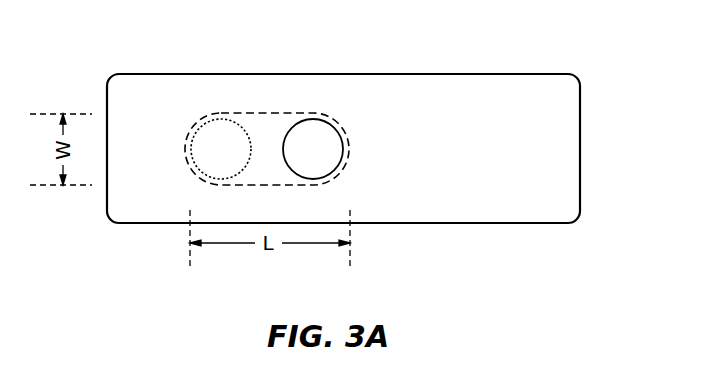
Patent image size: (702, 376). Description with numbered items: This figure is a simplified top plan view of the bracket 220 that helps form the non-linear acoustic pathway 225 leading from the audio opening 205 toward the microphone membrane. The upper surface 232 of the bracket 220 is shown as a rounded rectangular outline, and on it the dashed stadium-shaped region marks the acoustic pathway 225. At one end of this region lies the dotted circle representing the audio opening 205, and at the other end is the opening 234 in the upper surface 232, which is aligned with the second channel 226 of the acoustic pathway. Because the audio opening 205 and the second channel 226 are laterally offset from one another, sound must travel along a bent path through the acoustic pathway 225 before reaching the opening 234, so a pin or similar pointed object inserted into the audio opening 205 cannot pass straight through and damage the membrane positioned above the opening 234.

The bracket 220 is at (366, 118).
The upper surface 232 is at (169, 208).
The acoustic pathway 225 is at (267, 135).
The audio opening 205 is at (187, 134).
The opening 234 is at (344, 131).
The second channel 226 is at (363, 181).